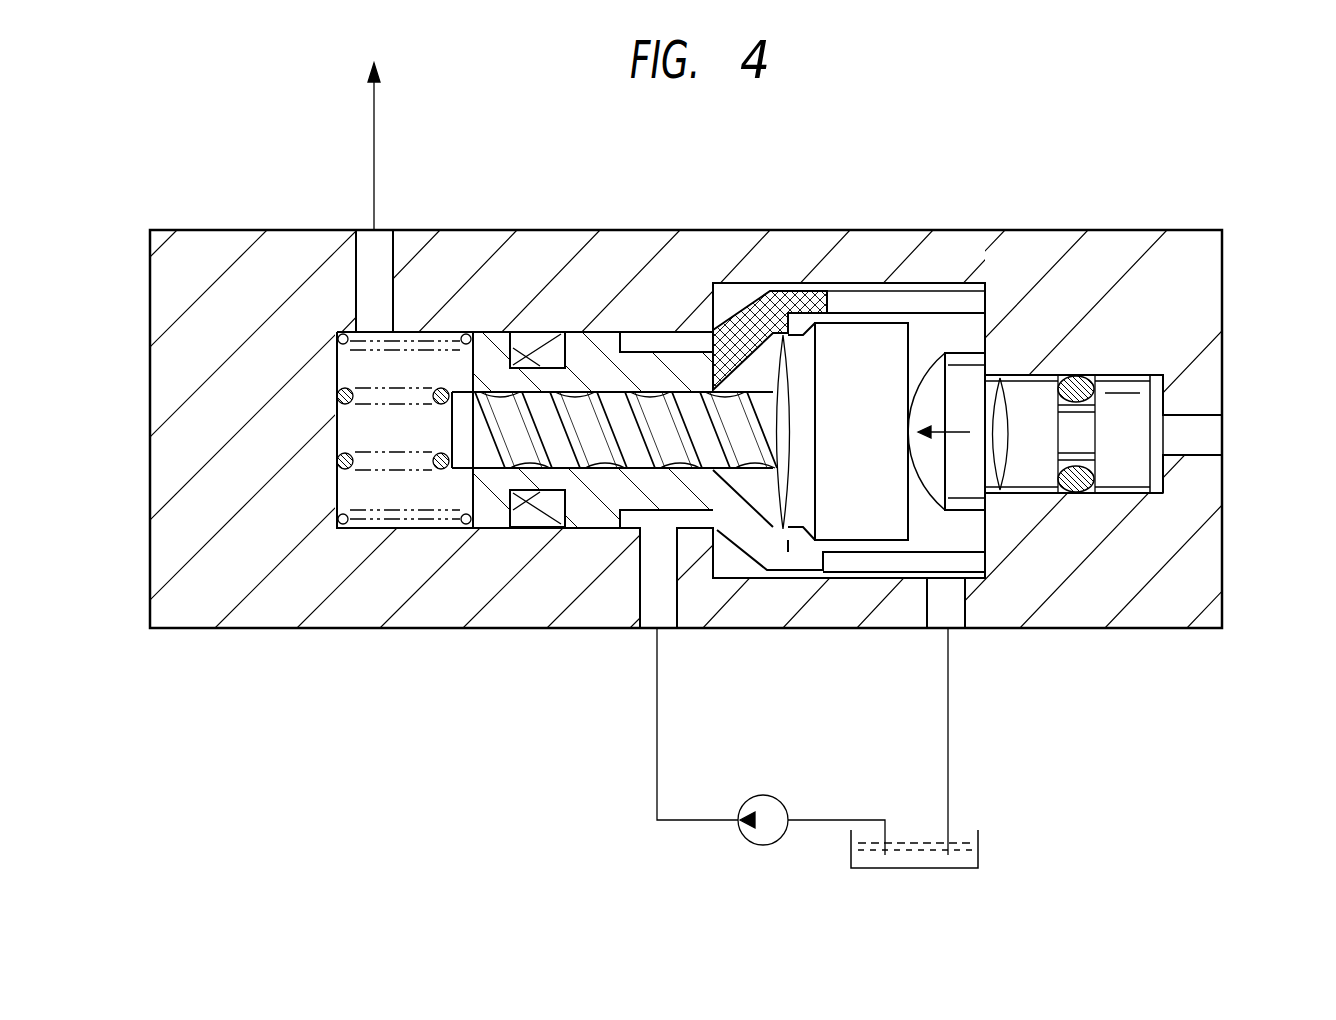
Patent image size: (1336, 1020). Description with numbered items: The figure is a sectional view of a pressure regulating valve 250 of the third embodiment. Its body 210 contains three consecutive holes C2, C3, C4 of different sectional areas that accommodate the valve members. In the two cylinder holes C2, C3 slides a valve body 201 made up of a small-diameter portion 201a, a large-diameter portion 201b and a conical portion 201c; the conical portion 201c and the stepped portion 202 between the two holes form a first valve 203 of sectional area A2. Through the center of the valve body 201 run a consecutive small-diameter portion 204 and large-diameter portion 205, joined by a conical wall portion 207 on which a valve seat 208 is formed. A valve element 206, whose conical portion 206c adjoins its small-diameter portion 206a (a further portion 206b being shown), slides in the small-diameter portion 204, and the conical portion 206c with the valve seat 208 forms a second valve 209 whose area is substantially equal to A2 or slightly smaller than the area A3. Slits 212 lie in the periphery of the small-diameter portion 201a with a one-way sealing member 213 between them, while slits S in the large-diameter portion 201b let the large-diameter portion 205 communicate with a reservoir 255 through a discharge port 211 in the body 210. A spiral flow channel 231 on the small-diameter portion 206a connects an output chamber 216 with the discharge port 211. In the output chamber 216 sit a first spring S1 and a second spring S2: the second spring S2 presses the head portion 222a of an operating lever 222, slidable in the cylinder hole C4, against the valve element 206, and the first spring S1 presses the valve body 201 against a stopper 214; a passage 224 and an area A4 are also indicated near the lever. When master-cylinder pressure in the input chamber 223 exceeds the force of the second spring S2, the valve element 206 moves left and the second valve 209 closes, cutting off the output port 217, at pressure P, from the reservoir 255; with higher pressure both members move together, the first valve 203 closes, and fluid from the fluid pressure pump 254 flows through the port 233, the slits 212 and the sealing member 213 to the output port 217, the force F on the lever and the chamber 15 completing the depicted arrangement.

The body 210 is at (202, 617).
The pressure regulating valve 250 is at (262, 638).
The output port 217 is at (367, 270).
The output chamber 216 is at (380, 487).
The valve body 201 is at (625, 359).
The small-diameter portion 201a is at (495, 330).
The large-diameter portion 201b is at (837, 568).
The conical portion 201c is at (743, 535).
The sealing member 213 is at (548, 330).
The slits 212 is at (520, 530).
The stepped portion 202 is at (695, 330).
The first valve 203 is at (708, 300).
The small-diameter portion 204 is at (600, 460).
The spiral flow channel 231 is at (622, 500).
The valve element 206 is at (860, 320).
The small-diameter portion 206a is at (473, 527).
The seat member sleeve 206b is at (925, 300).
The conical portion 206c is at (800, 545).
The conical wall portion 207 is at (782, 300).
The valve seat 208 is at (798, 300).
The second valve 209 is at (820, 305).
The chamber 15 is at (968, 285).
The stopper 214 is at (1025, 375).
The operating lever 222 is at (1046, 393).
The head portion 222a is at (1030, 600).
The input chamber 223 is at (1165, 380).
The passage 224 is at (1218, 440).
The port 233 is at (663, 597).
The large-diameter portion 205 is at (958, 552).
The discharge port 211 is at (950, 633).
The fluid pressure pump 254 is at (737, 833).
The reservoir 255 is at (978, 855).
The pressure port P is at (373, 132).
The force F is at (944, 419).
The slits S is at (907, 558).
The first spring S1 is at (456, 342).
The second spring S2 is at (432, 397).
The cylinder hole C2 is at (402, 522).
The cylinder hole C3 is at (772, 575).
The cylinder hole C4 is at (1140, 478).
The sectional area A2 is at (792, 372).
The area A3 is at (790, 422).
The area A4 is at (1058, 477).